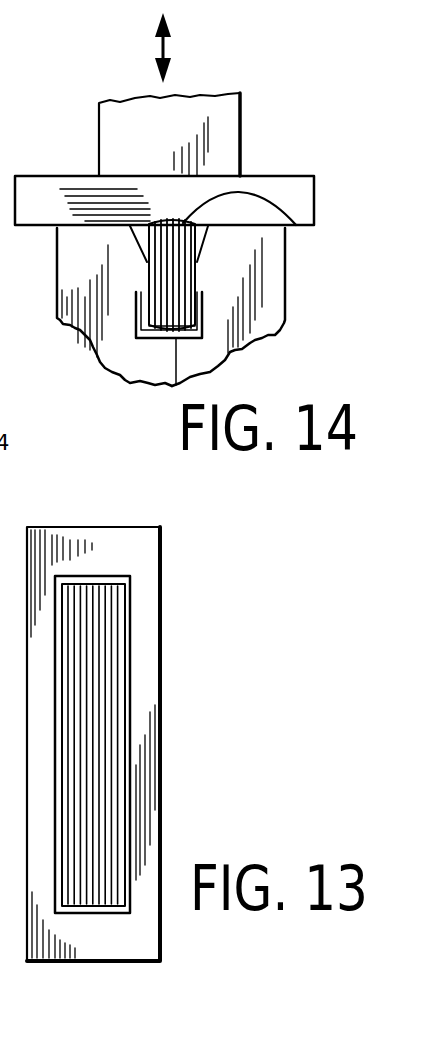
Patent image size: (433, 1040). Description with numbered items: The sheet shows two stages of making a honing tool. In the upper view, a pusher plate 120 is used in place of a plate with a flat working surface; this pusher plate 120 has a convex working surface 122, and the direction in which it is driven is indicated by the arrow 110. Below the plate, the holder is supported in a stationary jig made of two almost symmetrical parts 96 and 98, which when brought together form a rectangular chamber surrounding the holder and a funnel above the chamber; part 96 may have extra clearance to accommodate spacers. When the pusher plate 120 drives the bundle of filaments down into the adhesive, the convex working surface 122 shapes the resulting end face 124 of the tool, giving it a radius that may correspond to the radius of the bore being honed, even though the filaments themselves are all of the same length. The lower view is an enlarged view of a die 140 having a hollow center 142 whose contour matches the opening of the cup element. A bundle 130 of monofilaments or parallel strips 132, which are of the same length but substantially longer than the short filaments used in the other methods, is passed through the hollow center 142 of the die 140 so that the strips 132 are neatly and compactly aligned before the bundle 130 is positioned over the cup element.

In FIG. 14, the reciprocating motion arrow 110 is at (168, 47).
In FIG. 14, the pusher plate 120 is at (283, 188).
In FIG. 14, the convex working surface 122 is at (293, 223).
In FIG. 14, the end face 124 is at (165, 218).
In FIG. 14, the jig part 96 is at (73, 267).
In FIG. 14, the jig part 98 is at (268, 307).
In FIG. 13, the bundle 130 is at (133, 618).
In FIG. 13, the strips 132 is at (110, 675).
In FIG. 13, the die 140 is at (160, 710).
In FIG. 13, the hollow center 142 is at (127, 813).